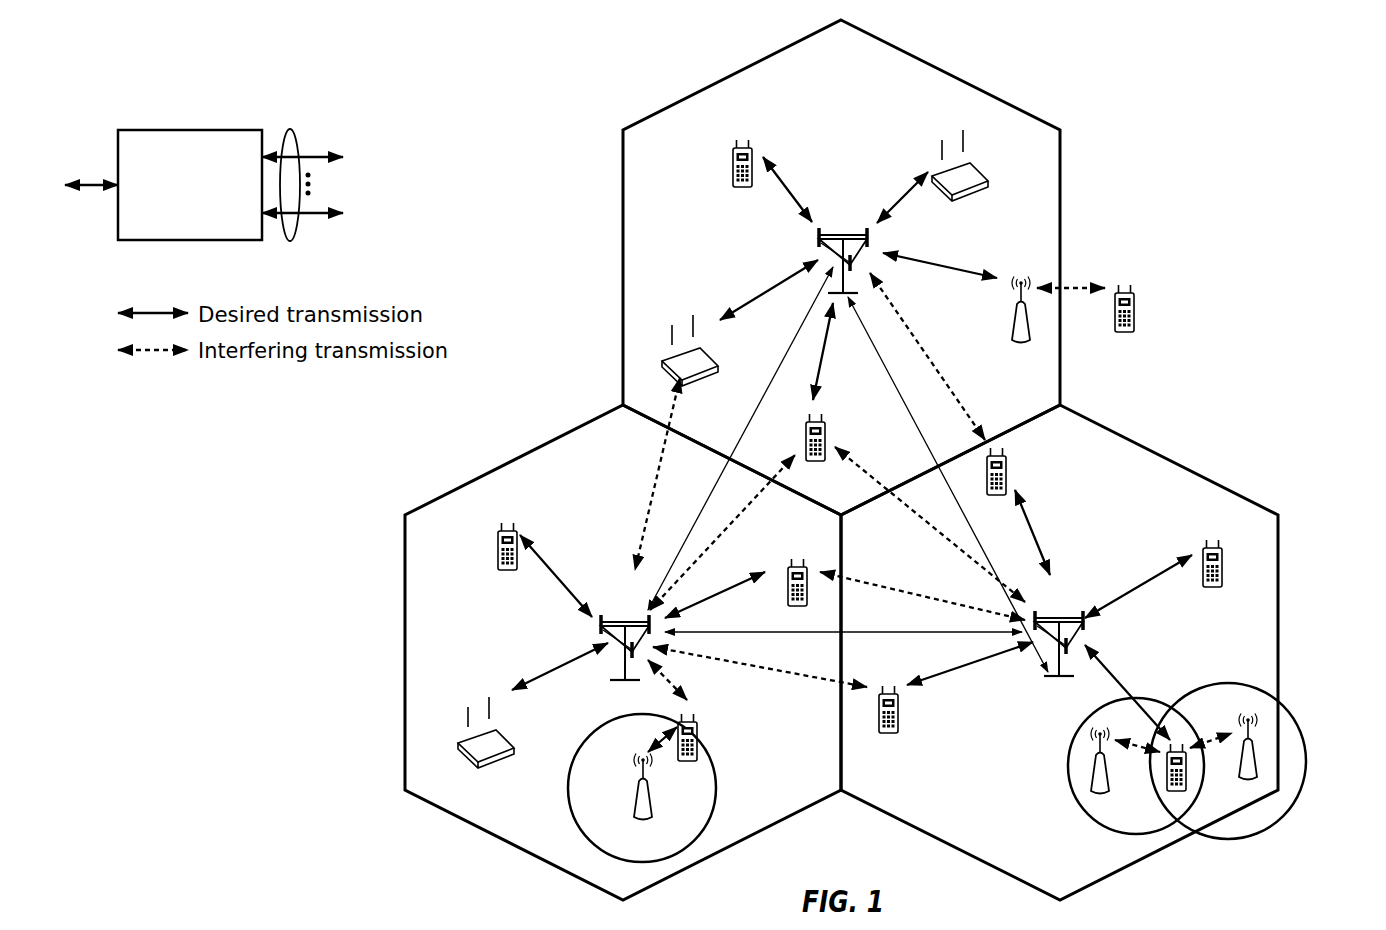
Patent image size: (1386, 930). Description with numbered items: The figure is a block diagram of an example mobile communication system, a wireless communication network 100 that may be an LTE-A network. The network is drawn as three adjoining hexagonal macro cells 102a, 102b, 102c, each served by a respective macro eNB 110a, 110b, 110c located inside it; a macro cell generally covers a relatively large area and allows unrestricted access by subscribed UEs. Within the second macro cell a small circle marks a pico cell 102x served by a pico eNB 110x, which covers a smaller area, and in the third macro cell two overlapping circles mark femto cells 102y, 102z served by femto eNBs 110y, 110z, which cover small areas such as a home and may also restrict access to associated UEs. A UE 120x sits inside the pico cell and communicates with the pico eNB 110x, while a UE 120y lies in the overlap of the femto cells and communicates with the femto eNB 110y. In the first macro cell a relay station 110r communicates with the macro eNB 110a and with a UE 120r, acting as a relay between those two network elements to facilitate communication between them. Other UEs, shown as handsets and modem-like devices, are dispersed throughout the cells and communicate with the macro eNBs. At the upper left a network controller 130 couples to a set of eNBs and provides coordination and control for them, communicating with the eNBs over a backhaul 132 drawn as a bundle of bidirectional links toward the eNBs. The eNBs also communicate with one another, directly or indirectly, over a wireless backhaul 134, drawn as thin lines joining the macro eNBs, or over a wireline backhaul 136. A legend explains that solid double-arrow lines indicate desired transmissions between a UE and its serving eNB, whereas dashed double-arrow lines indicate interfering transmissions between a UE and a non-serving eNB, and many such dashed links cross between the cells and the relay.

The wireless communication network 100 is at (1212, 91).
The macro cell 102a is at (954, 74).
The macro cell 102b is at (530, 457).
The macro cell 102c is at (1169, 460).
The pico cell 102x is at (588, 736).
The femto cell 102y is at (1077, 730).
The femto cell 102z is at (1228, 683).
The macro eNB 110a is at (841, 234).
The macro eNB 110b is at (622, 620).
The macro eNB 110c is at (1062, 617).
The relay station 110r is at (1011, 330).
The pico eNB 110x is at (652, 812).
The femto eNB 110y is at (1108, 786).
The femto eNB 110z is at (1256, 774).
The UE 120x is at (697, 735).
The UE 120y is at (1168, 792).
The UE 120r is at (1134, 323).
The network controller 130 is at (188, 130).
The backhaul 132 is at (304, 126).
The wireless backhaul 134 is at (736, 439).
The wireline backhaul 136 is at (908, 437).